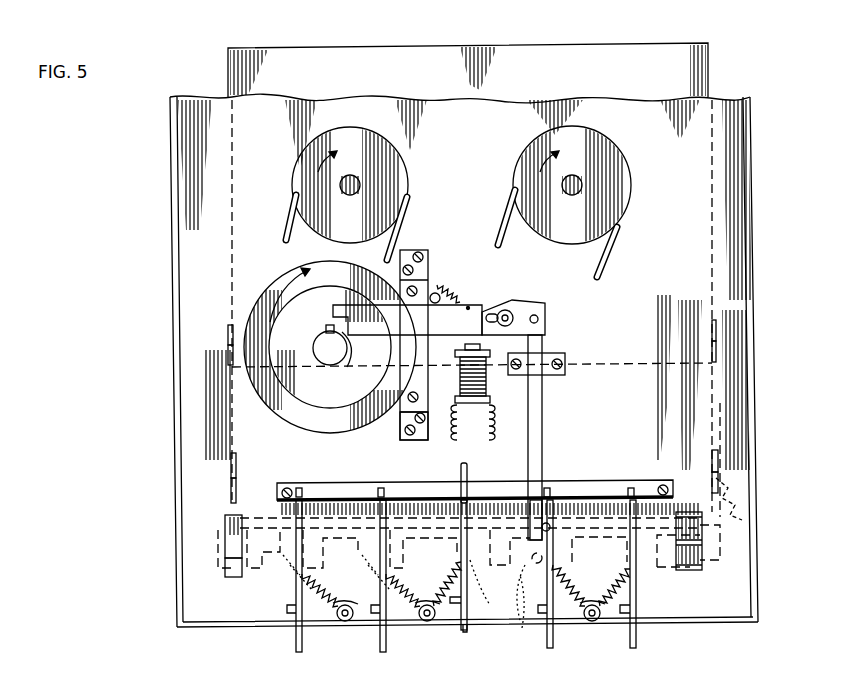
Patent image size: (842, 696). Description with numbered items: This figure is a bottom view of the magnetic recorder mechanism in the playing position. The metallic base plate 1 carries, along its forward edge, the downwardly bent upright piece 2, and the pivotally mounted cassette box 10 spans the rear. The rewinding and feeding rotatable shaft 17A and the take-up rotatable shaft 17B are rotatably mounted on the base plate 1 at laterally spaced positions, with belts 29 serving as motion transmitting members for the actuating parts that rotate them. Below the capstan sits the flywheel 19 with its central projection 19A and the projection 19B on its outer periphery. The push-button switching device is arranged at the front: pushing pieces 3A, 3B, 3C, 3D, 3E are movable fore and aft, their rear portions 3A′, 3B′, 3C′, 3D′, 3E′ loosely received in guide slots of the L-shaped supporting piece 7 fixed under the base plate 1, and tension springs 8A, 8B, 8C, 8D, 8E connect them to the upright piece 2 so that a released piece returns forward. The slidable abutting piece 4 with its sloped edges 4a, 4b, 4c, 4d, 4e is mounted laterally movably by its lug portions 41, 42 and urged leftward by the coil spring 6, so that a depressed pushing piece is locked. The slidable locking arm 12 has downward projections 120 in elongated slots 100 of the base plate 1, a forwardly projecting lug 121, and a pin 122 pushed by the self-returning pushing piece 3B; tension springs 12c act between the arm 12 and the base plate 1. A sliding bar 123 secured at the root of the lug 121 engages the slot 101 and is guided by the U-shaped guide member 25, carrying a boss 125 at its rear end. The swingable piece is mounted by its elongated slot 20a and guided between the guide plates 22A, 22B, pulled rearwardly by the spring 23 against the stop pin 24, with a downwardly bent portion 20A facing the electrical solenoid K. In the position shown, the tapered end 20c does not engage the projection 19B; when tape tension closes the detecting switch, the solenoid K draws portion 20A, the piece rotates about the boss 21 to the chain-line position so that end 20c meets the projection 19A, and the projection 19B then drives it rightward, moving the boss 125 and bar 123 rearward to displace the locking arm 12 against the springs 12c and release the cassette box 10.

The base plate 1 is at (752, 208).
The upright piece 2 is at (268, 625).
The pushing piece 3A is at (636, 647).
The pushing piece 3B is at (550, 648).
The pushing piece 3C is at (465, 633).
The pushing piece 3D is at (383, 652).
The pushing piece 3E is at (299, 652).
The rear portion of pushing piece 3A′ is at (631, 488).
The rear portion of pushing piece 3B′ is at (547, 488).
The rear portion of pushing piece 3C′ is at (464, 466).
The rear portion of pushing piece 3D′ is at (381, 488).
The rear portion of pushing piece 3E′ is at (298, 488).
The slidable abutting piece 4 is at (470, 539).
The sloped edge 4a is at (671, 568).
The sloped edge 4b is at (599, 563).
The sloped edge 4c is at (500, 575).
The sloped edge 4d is at (380, 560).
The sloped edge 4e is at (265, 560).
The coil spring 6 is at (694, 512).
The supporting piece 7 is at (617, 481).
The tension spring 8A is at (600, 619).
The tension spring 8B is at (585, 619).
The tension spring 8C is at (434, 619).
The tension spring 8D is at (419, 621).
The tension spring 8E is at (341, 621).
The cassette box 10 is at (431, 46).
The slidable locking arm 12 is at (237, 413).
The tension spring 12c is at (748, 515).
The rewinding and feeding rotatable shaft 17A is at (573, 176).
The take-up rotatable shaft 17B is at (350, 176).
The flywheel 19 is at (228, 344).
The central projection 19A is at (318, 358).
The projection 19B is at (327, 331).
The downwardly bent portion 20A is at (520, 333).
The elongated slot 20a is at (502, 312).
The tapered end portion 20c is at (348, 366).
The boss 21 is at (525, 306).
The guide plate 22A is at (418, 250).
The guide plate 22B is at (406, 440).
The spring 23 is at (450, 293).
The stop pin 24 is at (436, 293).
The U-shaped guide member 25 is at (565, 372).
The belt 29 is at (290, 224).
The lug portion 41 is at (706, 535).
The lug portion 42 is at (225, 520).
The elongated slot 100 is at (228, 328).
The slot 101 is at (548, 524).
The downward projection 120 is at (228, 358).
The forwardly projecting lug 121 is at (534, 562).
The pin 122 is at (531, 612).
The sliding bar 123 is at (543, 413).
The boss 125 is at (539, 319).
The electrical solenoid K is at (470, 404).